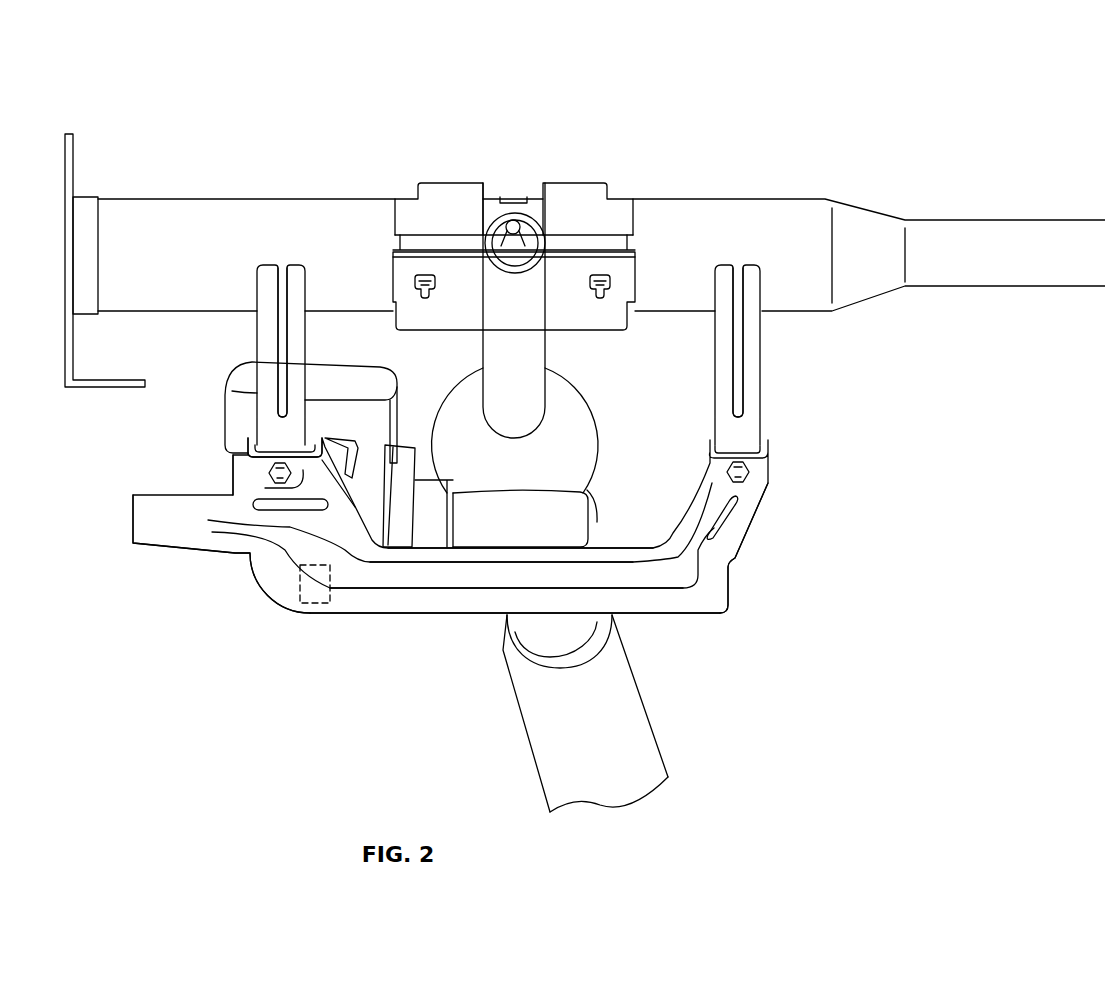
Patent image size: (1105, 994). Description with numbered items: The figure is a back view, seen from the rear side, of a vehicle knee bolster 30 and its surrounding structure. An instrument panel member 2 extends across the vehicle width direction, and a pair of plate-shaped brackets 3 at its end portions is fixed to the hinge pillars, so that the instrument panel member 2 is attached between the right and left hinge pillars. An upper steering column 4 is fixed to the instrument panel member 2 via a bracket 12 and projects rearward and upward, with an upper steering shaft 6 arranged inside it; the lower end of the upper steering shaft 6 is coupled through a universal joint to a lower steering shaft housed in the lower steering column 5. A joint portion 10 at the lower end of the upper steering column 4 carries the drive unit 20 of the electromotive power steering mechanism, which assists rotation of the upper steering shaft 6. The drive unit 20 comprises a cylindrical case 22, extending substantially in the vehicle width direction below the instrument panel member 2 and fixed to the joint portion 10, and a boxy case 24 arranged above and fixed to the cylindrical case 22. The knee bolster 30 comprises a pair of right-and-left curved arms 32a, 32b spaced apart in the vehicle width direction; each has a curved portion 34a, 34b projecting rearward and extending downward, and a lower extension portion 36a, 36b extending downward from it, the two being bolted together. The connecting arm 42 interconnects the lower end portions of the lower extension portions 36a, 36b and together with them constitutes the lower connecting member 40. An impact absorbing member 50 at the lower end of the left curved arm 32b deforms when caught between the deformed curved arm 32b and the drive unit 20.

The instrument panel member 2 is at (1000, 228).
The bracket 3 is at (74, 152).
The upper steering column 4 is at (530, 348).
The lower steering column 5 is at (627, 710).
The upper steering shaft 6 is at (513, 220).
The joint portion 10 is at (592, 400).
The bracket 12 is at (585, 196).
The drive unit 20 is at (208, 397).
The cylindrical case 22 is at (238, 476).
The boxy case 24 is at (233, 420).
The knee bolster 30 is at (299, 712).
The curved arm 32a is at (740, 264).
The curved arm 32b is at (288, 264).
The curved portion 34a is at (755, 357).
The curved portion 34b is at (265, 333).
The lower extension portion 36a is at (730, 535).
The lower extension portion 36b is at (285, 545).
The lower connecting member 40 is at (393, 616).
The connecting arm 42 is at (457, 603).
The impact absorbing member 50 is at (300, 592).